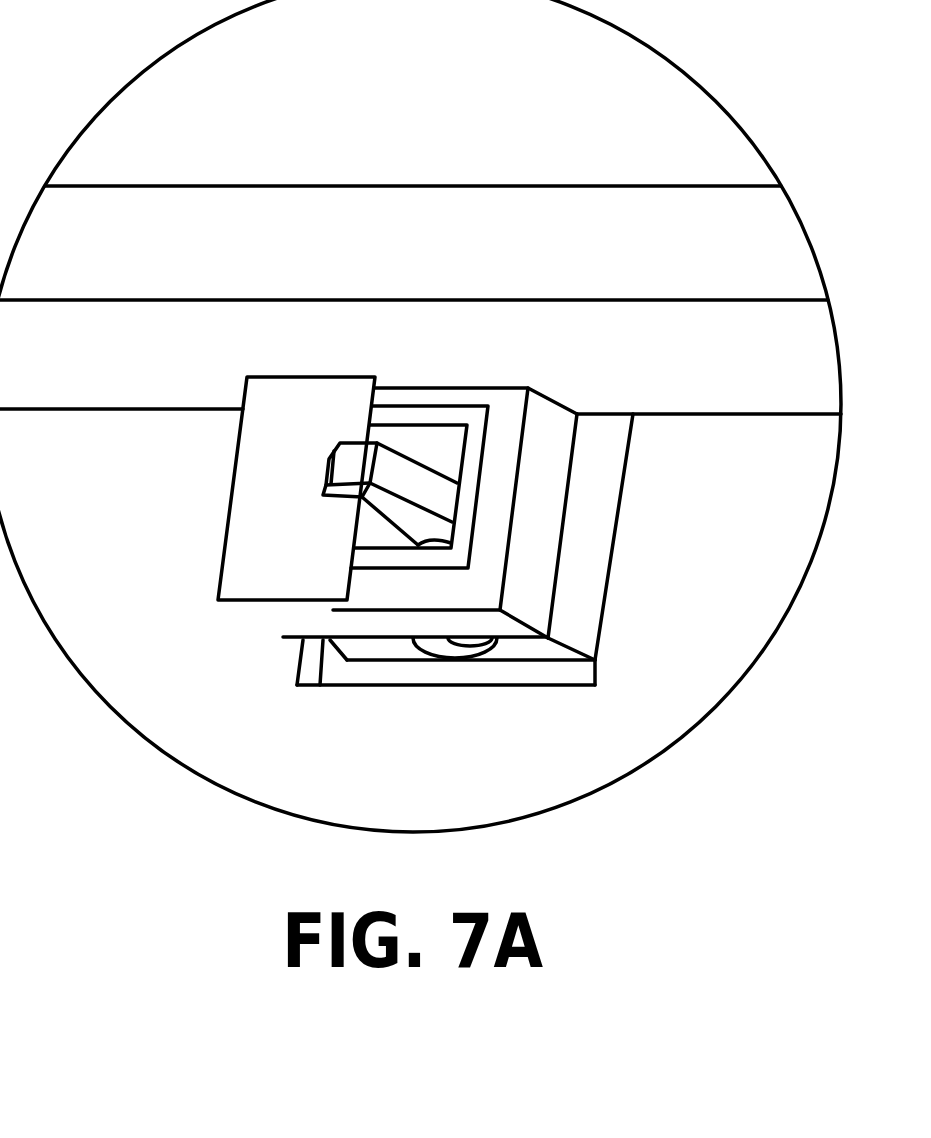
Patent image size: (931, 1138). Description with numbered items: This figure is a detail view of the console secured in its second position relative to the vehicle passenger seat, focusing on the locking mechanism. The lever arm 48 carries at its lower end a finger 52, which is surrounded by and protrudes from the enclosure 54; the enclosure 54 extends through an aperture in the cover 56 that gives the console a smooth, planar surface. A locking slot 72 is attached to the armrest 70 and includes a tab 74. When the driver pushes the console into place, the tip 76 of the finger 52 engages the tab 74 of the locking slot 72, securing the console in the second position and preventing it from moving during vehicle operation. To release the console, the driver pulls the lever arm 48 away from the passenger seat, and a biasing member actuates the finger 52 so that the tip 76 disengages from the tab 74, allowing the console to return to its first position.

The lever arm 48 is at (434, 464).
The finger 52 is at (405, 480).
The enclosure 54 is at (592, 563).
The cover 56 is at (88, 462).
The armrest 70 is at (353, 210).
The locking slot 72 is at (262, 548).
The tab 74 is at (373, 390).
The tip 76 is at (347, 472).